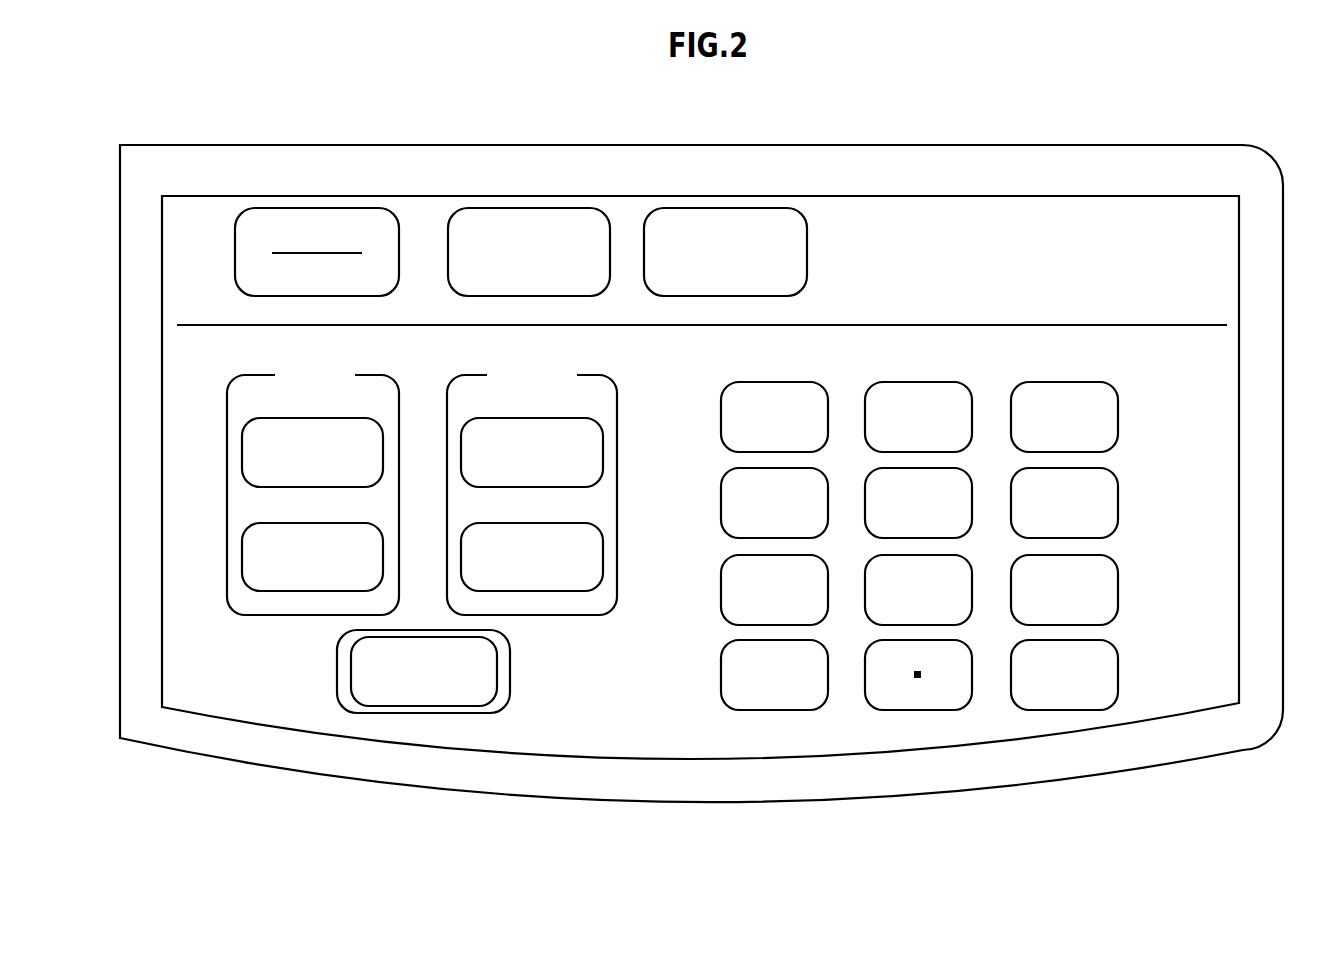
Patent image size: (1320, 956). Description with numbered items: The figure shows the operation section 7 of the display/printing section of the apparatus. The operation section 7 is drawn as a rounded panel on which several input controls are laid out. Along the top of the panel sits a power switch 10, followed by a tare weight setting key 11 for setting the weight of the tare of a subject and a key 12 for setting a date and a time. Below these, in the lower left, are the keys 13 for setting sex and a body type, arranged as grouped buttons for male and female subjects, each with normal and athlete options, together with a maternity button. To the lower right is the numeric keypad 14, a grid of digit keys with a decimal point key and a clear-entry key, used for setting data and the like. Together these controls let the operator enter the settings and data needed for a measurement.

The operation section 7 is at (1138, 140).
The power switch 10 is at (309, 216).
The tare weight setting key 11 is at (522, 216).
The key for setting a date and a time 12 is at (705, 216).
The keys for setting sex and a body type 13 is at (298, 668).
The numeric keypad 14 is at (937, 717).